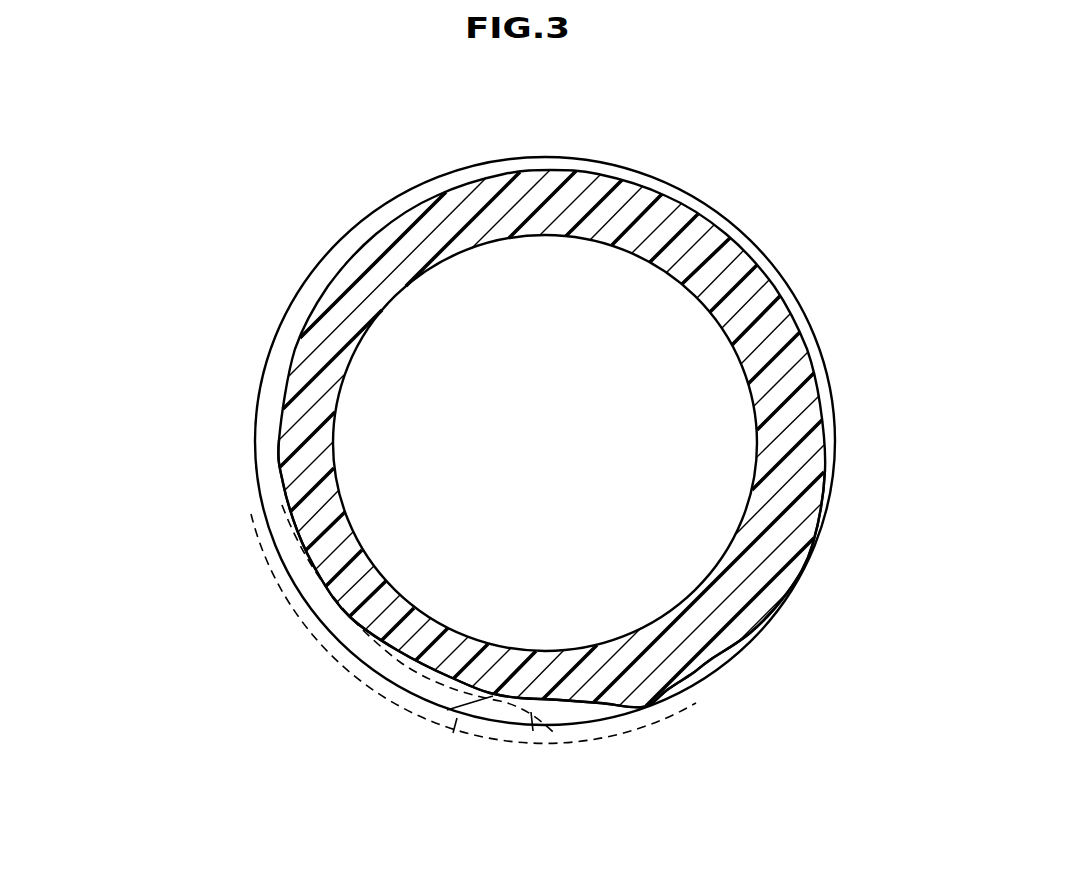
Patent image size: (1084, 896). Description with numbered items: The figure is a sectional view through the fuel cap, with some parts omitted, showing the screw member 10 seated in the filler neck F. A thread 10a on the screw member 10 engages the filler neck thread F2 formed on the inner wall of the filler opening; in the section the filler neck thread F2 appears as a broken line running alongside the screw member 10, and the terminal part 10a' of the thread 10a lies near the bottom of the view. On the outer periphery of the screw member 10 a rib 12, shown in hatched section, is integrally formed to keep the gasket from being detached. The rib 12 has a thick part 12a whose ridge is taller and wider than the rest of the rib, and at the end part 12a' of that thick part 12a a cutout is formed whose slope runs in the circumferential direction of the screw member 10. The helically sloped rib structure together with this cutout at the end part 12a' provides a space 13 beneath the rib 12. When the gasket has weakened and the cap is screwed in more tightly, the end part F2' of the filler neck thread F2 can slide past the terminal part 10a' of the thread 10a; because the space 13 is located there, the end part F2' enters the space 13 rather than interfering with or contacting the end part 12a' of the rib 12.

The screw member 10 is at (748, 212).
The rib 12 is at (780, 312).
The thread 10a is at (366, 591).
The terminal part of the thread 10a' is at (505, 623).
The thick part 12a is at (734, 598).
The end part of the thick part 12a' is at (629, 735).
The space 13 is at (520, 750).
The filler neck F is at (268, 540).
The filler neck thread F2 is at (412, 760).
The end part of the filler neck thread F2' is at (586, 656).